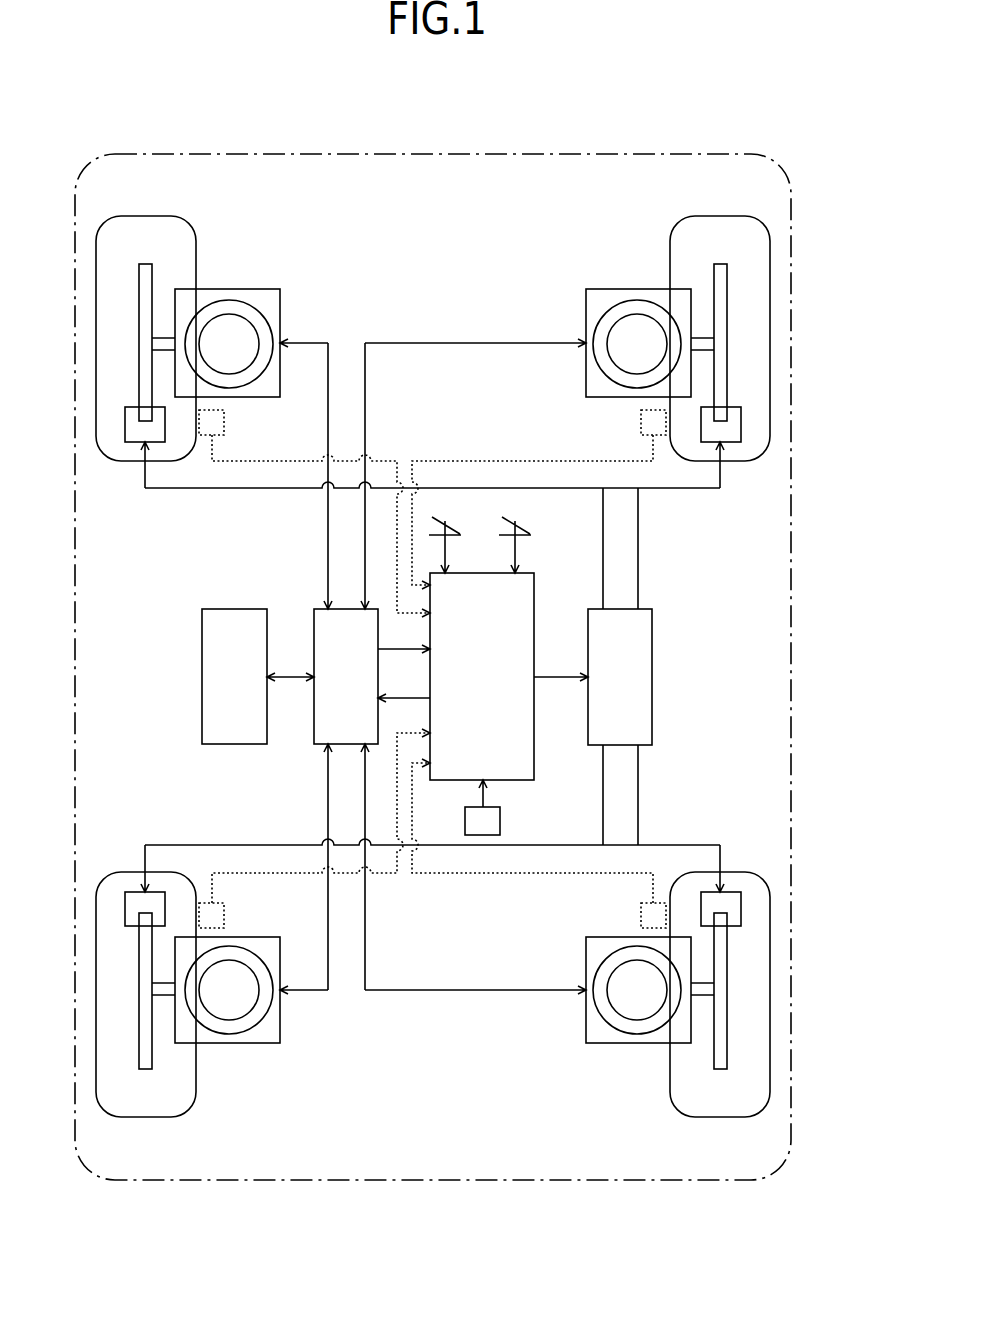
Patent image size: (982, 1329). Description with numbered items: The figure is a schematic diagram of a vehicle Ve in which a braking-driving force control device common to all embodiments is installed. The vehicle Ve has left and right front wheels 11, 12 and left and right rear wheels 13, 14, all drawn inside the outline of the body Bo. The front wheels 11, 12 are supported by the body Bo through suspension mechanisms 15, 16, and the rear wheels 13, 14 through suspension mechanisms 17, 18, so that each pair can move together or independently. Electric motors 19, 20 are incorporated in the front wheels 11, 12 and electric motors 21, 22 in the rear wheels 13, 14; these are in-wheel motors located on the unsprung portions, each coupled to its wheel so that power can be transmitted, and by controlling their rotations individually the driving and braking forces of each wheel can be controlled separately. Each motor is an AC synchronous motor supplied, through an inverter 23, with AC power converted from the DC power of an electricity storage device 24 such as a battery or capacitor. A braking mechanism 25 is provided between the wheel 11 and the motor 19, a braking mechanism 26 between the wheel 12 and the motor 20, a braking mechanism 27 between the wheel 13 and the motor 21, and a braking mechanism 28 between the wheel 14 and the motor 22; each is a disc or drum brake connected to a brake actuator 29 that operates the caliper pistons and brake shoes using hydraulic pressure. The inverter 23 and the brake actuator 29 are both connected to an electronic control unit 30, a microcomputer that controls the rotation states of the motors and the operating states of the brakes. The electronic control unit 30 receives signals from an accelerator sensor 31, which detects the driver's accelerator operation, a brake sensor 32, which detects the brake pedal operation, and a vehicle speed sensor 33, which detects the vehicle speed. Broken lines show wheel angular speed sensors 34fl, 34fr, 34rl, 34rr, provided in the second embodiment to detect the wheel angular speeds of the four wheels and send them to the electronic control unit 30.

The vehicle Ve is at (599, 98).
The body Bo is at (795, 634).
The left front wheel 11 is at (156, 216).
The right front wheel 12 is at (723, 216).
The left rear wheel 13 is at (154, 1117).
The right rear wheel 14 is at (715, 1117).
The suspension mechanism 15 is at (230, 300).
The suspension mechanism 16 is at (637, 300).
The suspension mechanism 17 is at (230, 946).
The suspension mechanism 18 is at (637, 946).
The electric motor 19 is at (242, 398).
The electric motor 20 is at (614, 398).
The electric motor 21 is at (259, 1043).
The electric motor 22 is at (614, 1043).
The inverter 23 is at (323, 609).
The electricity storage device 24 is at (215, 609).
The braking mechanism 25 is at (125, 424).
The braking mechanism 26 is at (741, 424).
The braking mechanism 27 is at (125, 908).
The braking mechanism 28 is at (741, 905).
The brake actuator 29 is at (652, 668).
The electronic control unit 30 is at (534, 583).
The accelerator sensor 31 is at (445, 522).
The brake sensor 32 is at (515, 522).
The vehicle speed sensor 33 is at (500, 823).
The wheel angular speed sensor 34fl is at (224, 422).
The wheel angular speed sensor 34fr is at (641, 422).
The wheel angular speed sensor 34rl is at (224, 910).
The wheel angular speed sensor 34rr is at (641, 910).